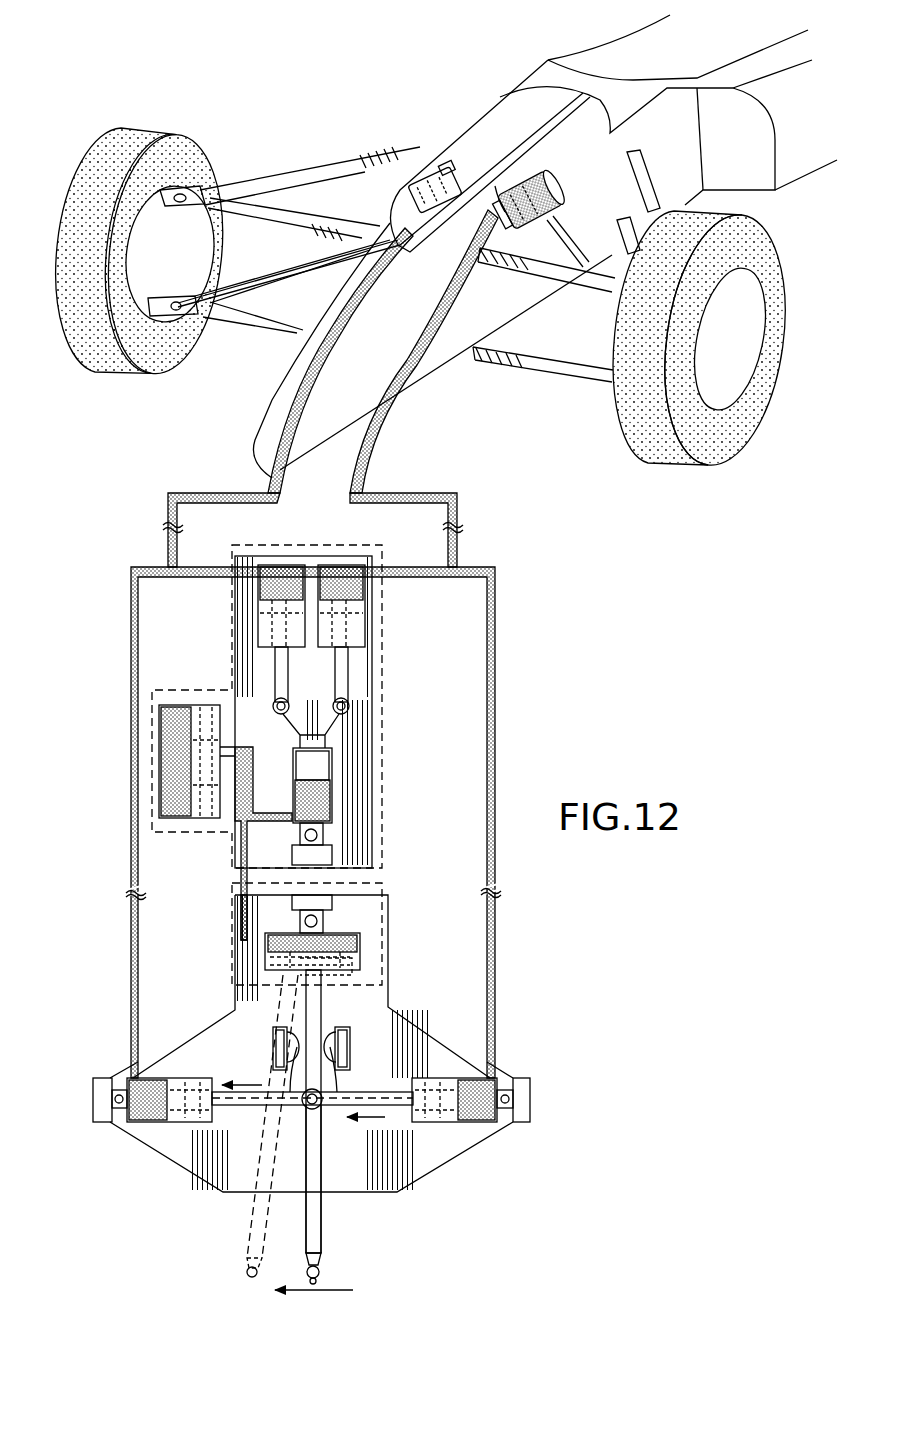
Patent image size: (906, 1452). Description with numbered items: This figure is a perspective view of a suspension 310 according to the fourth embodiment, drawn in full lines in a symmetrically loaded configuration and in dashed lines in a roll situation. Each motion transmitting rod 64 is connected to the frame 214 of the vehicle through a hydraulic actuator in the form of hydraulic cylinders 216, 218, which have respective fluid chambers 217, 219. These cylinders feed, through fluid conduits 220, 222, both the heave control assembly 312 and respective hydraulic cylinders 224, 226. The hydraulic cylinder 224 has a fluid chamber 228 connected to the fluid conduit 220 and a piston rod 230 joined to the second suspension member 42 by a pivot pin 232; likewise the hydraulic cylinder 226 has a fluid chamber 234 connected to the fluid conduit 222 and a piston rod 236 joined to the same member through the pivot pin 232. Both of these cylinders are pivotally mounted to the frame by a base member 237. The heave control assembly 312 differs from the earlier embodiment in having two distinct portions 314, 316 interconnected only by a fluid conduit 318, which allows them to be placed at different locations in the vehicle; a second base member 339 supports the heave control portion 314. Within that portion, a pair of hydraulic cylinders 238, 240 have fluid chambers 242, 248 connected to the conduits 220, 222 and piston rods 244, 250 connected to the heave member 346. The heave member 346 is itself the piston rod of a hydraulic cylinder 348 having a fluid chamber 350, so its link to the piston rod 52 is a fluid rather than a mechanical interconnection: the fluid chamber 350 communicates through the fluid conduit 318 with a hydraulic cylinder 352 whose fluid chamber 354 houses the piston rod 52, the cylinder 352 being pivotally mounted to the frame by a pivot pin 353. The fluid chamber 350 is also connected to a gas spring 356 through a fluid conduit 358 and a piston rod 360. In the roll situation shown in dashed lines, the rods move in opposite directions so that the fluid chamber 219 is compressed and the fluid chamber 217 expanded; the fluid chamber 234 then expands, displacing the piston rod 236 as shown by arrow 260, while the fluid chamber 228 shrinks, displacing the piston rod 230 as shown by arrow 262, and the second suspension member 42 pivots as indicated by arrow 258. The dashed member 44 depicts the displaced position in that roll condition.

The second suspension member 42 is at (327, 1170).
The steering shaft alternate position 44 is at (293, 1040).
The piston rod 52 is at (314, 1000).
The motion transmitting rod 64 is at (290, 263).
The frame 214 is at (525, 150).
The hydraulic cylinder 216 is at (430, 180).
The fluid chamber 217 is at (452, 172).
The hydraulic cylinder 218 is at (542, 196).
The fluid chamber 219 is at (520, 192).
The fluid conduit 220 is at (215, 493).
The fluid conduit 222 is at (432, 493).
The hydraulic cylinder 224 is at (180, 1078).
The hydraulic cylinder 226 is at (452, 1078).
The fluid chamber 228 is at (152, 1122).
The piston rod 230 is at (247, 1100).
The pivot pin 232 is at (325, 1157).
The fluid chamber 234 is at (475, 1122).
The piston rod 236 is at (362, 1100).
The base member 237 is at (393, 1143).
The hydraulic cylinder 238 is at (258, 632).
The hydraulic cylinder 240 is at (365, 628).
The fluid chamber 242 is at (260, 592).
The piston rod 244 is at (278, 663).
The fluid chamber 248 is at (368, 585).
The piston rod 250 is at (345, 670).
The arrow 258 is at (325, 1290).
The arrow 260 is at (395, 1105).
The arrow 262 is at (252, 1080).
The suspension 310 is at (140, 548).
The heave control assembly 312 is at (394, 873).
The heave control portion 314 is at (383, 705).
The heave control portion 316 is at (360, 970).
The fluid conduit 318 is at (235, 887).
The second base member 339 is at (355, 833).
The heave member 346 is at (318, 735).
The hydraulic cylinder 348 is at (330, 770).
The fluid chamber 350 is at (332, 800).
The hydraulic cylinder 352 is at (303, 967).
The pivot pin 353 is at (300, 921).
The fluid chamber 354 is at (360, 940).
The gas spring 356 is at (172, 818).
The fluid conduit 358 is at (253, 790).
The piston rod 360 is at (227, 772).